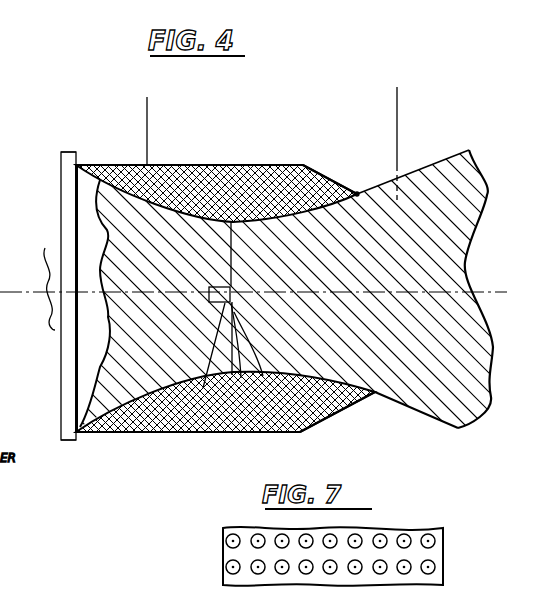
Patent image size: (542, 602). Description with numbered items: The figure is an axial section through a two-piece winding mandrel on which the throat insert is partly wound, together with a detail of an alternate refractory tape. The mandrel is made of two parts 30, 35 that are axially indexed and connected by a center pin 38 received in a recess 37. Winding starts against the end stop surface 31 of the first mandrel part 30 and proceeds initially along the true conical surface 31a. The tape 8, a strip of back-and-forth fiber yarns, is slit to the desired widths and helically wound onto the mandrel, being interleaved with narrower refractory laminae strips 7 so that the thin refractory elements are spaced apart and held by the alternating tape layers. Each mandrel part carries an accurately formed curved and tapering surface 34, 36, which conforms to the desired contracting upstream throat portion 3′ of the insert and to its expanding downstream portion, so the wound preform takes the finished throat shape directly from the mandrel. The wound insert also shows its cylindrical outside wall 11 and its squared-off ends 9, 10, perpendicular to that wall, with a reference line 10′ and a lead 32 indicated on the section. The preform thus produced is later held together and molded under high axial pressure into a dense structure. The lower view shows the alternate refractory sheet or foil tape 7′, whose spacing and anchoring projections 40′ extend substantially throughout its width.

In FIG. 4, the refractory laminae 7 is at (373, 394).
In FIG. 7, the refractory sheet or foil tape 7′ is at (440, 557).
In FIG. 4, the tape 8 is at (290, 165).
In FIG. 4, the end of insert 9 is at (397, 122).
In FIG. 4, the end of insert 10 is at (140, 181).
In FIG. 4, the wedge reference line 10′ is at (148, 140).
In FIG. 4, the outside wall surface 11 is at (205, 165).
In FIG. 4, the upstream throat portion 3′ is at (180, 392).
In FIG. 4, the mandrel part 30 is at (55, 206).
In FIG. 4, the end stop surface 31 is at (77, 164).
In FIG. 4, the conical surface 31a is at (77, 440).
In FIG. 4, the flexible lead 32 is at (45, 278).
In FIG. 4, the curved tapering surface 34 is at (216, 378).
In FIG. 4, the mandrel part 35 is at (469, 150).
In FIG. 4, the curved tapering surface 36 is at (424, 172).
In FIG. 4, the recess 37 is at (280, 378).
In FIG. 4, the center pin 38 is at (258, 376).
In FIG. 7, the spacing and anchoring projections 40′ is at (238, 540).